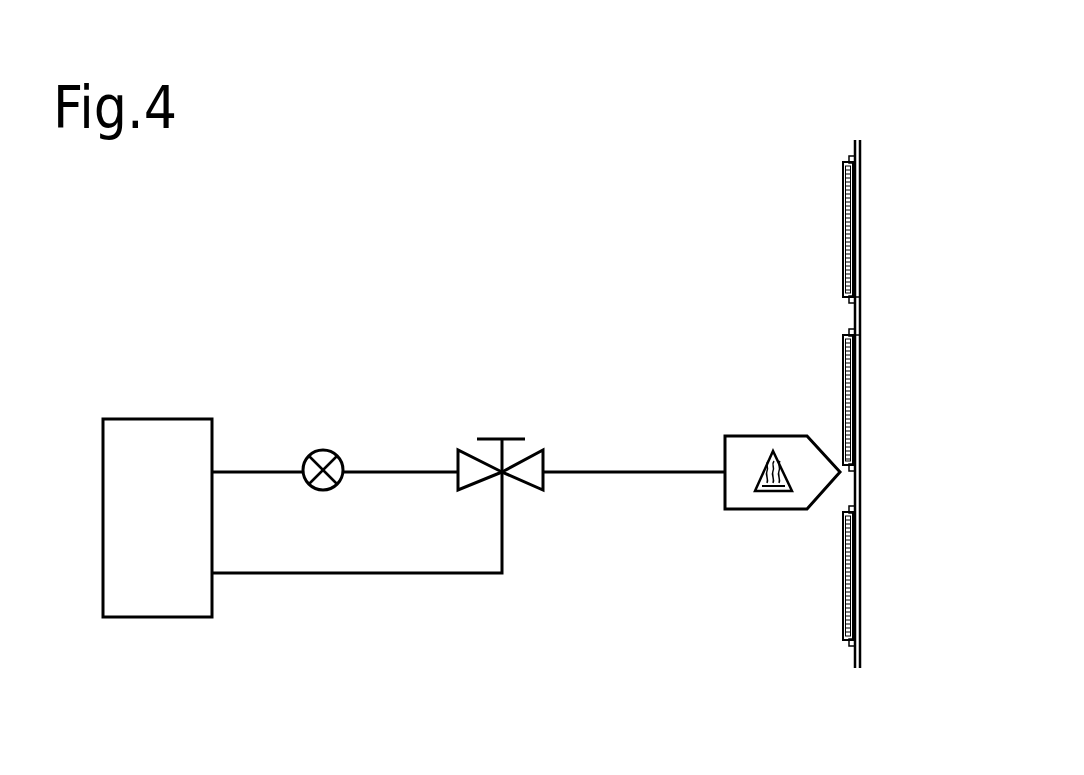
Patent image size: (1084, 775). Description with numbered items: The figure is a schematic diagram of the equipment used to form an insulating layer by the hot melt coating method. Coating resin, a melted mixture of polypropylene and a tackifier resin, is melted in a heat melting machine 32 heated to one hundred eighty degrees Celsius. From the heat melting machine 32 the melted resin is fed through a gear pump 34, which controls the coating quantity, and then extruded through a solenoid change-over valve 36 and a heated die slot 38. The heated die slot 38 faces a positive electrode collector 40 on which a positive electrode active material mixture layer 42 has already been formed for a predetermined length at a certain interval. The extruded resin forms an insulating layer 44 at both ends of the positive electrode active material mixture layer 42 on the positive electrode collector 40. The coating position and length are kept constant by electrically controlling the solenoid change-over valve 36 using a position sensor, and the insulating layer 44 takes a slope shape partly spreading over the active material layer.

The heat melting machine 32 is at (173, 528).
The gear pump 34 is at (320, 451).
The solenoid change-over valve 36 is at (537, 482).
The heated die slot 38 is at (733, 500).
The positive electrode collector 40 is at (855, 665).
The positive electrode active material mixture layer 42 is at (843, 233).
The insulating layer 44 is at (850, 158).